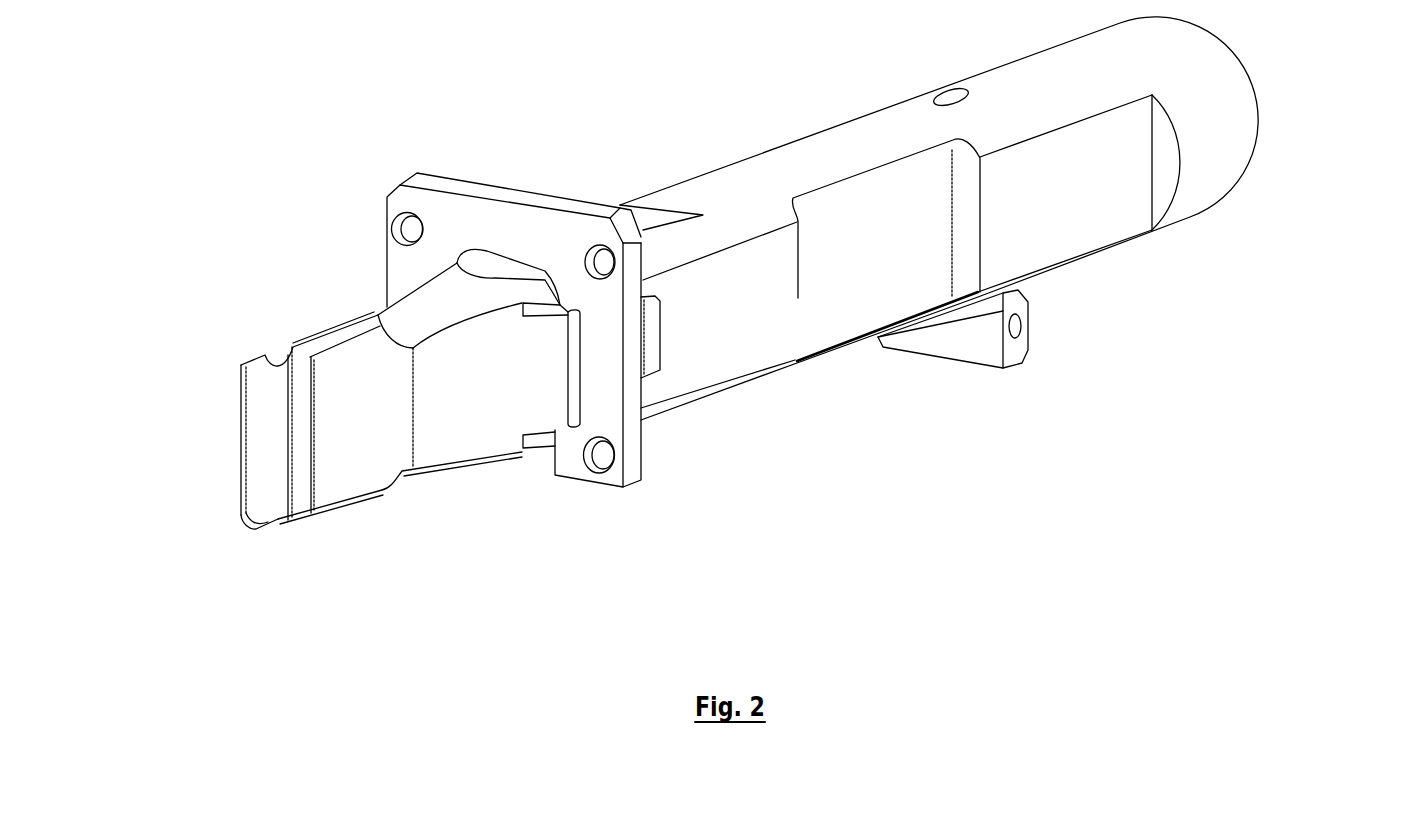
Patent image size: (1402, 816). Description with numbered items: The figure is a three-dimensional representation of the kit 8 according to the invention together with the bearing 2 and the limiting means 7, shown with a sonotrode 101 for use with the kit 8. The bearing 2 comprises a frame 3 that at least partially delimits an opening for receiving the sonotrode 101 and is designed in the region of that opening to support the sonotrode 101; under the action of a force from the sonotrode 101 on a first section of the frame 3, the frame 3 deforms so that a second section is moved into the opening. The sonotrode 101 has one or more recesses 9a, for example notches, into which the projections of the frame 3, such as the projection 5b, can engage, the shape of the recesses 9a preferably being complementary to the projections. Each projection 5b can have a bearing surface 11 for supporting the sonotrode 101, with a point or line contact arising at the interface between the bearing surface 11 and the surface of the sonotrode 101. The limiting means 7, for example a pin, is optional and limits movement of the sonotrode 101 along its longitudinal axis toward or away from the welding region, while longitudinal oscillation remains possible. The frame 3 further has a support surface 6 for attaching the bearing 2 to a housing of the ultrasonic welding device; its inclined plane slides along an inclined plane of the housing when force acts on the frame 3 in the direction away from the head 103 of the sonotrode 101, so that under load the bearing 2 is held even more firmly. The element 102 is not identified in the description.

The sonotrode 101 is at (1240, 132).
The cutting edge 102 is at (262, 530).
The head of the sonotrode 103 is at (268, 382).
The bearing 2 is at (632, 488).
The frame 3 is at (389, 185).
The projection 5b is at (563, 283).
The support surface 6 is at (648, 298).
The limiting means 7 is at (1015, 367).
The kit 8 is at (645, 472).
The recess 9a is at (540, 448).
The bearing surface 11 is at (570, 300).